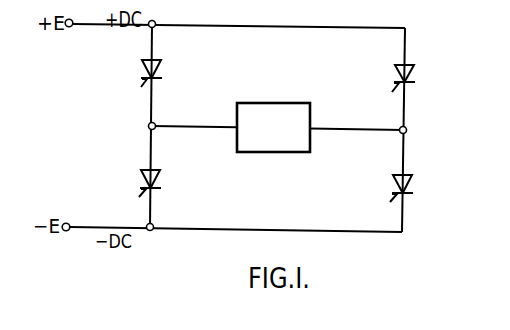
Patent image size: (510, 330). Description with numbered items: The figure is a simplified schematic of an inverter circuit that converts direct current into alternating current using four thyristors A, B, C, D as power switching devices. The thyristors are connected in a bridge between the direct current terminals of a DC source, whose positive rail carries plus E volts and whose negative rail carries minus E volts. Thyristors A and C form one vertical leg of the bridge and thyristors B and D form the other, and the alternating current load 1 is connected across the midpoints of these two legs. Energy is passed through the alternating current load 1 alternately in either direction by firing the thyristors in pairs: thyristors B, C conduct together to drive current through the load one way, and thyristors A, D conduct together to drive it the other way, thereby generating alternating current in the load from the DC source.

The alternating current load 1 is at (301, 103).
The thyristor A is at (142, 72).
The thyristor B is at (412, 76).
The thyristor C is at (143, 183).
The thyristor D is at (409, 188).